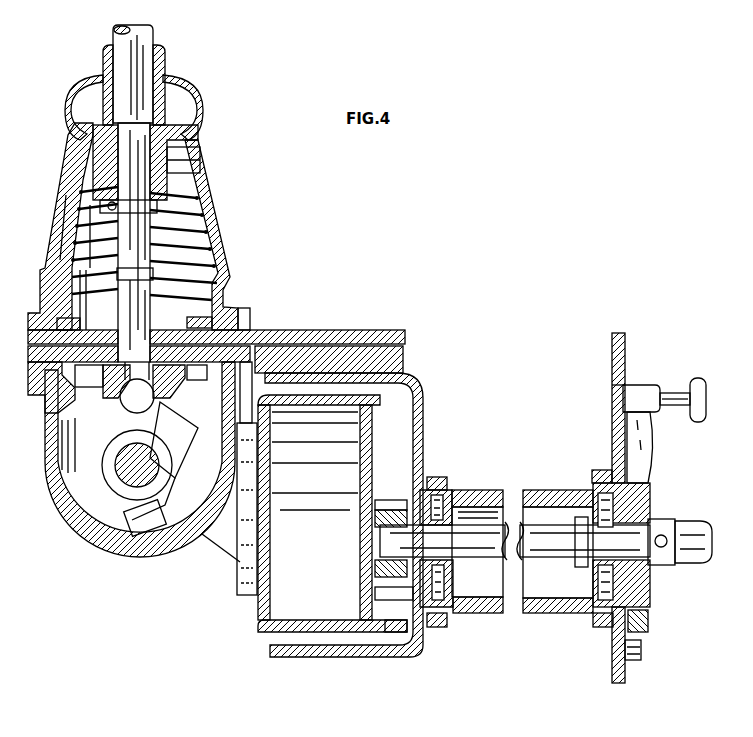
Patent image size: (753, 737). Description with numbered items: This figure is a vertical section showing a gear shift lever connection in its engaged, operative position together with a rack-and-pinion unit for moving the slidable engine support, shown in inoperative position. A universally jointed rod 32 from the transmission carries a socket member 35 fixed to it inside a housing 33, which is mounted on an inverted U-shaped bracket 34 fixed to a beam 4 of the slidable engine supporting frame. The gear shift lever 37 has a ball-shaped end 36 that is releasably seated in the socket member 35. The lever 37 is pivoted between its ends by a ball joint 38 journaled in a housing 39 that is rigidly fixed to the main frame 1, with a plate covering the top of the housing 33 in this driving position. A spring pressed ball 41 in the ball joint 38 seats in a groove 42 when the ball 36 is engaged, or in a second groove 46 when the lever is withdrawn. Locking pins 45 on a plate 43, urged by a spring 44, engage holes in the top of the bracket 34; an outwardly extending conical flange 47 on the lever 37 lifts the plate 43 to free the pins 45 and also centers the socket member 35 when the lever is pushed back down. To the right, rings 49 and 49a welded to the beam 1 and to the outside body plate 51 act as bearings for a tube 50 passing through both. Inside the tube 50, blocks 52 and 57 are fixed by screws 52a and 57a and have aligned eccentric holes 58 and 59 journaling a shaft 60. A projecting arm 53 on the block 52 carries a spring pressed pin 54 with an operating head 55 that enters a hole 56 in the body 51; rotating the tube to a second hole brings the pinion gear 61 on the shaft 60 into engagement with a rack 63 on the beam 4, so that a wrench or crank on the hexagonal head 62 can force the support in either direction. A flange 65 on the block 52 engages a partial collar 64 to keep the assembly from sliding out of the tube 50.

The frame 1 is at (425, 418).
The beam 4 is at (263, 627).
The universally jointed rod 32 is at (115, 492).
The housing 33 is at (85, 540).
The inverted U-shaped bracket 34 is at (250, 333).
The socket member 35 is at (105, 418).
The ball-shaped end 36 is at (137, 387).
The gear shift lever 37 is at (157, 37).
The ball joint 38 is at (97, 155).
The housing 39 is at (66, 214).
The spring pressed ball 41 is at (100, 213).
The groove 42 is at (168, 190).
The plate 43 is at (223, 300).
The spring 44 is at (220, 290).
The locking pins 45 is at (96, 380).
The groove 46 is at (192, 247).
The conical flange 47 is at (47, 393).
The ring 49 is at (443, 487).
The ring 49a is at (605, 476).
The tube 50 is at (527, 490).
The body plate 51 is at (611, 352).
The block 52 is at (645, 498).
The screws 52a is at (597, 490).
The projecting arm 53 is at (642, 447).
The spring pressed pin 54 is at (677, 383).
The operating head 55 is at (697, 387).
The hole 56 is at (612, 393).
The block 57 is at (457, 587).
The screws 57a is at (452, 493).
The eccentric hole 58 is at (593, 567).
The eccentric hole 59 is at (458, 563).
The shaft 60 is at (508, 563).
The pinion gear 61 is at (378, 516).
The hexagonal head 62 is at (697, 565).
The rack 63 is at (393, 625).
The partial collar 64 is at (648, 633).
The flange 65 is at (617, 637).